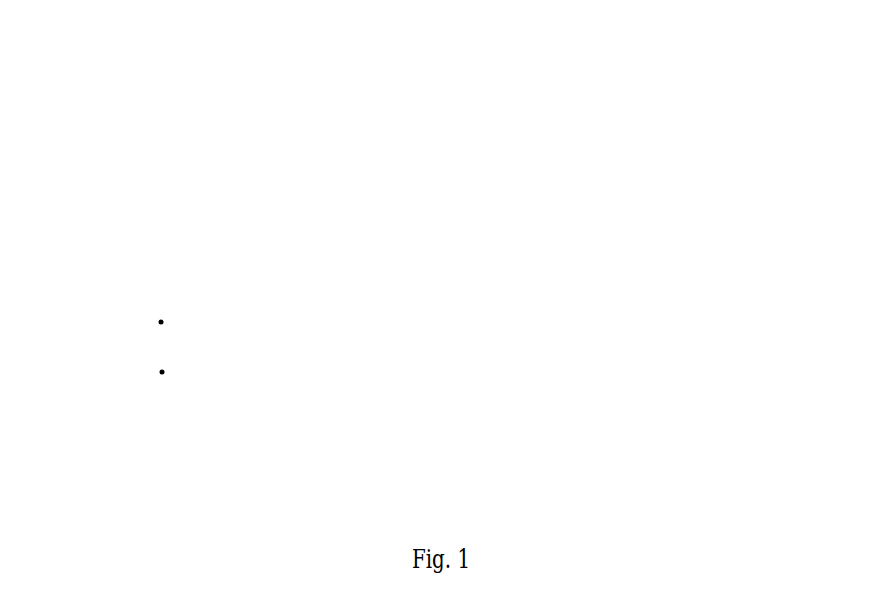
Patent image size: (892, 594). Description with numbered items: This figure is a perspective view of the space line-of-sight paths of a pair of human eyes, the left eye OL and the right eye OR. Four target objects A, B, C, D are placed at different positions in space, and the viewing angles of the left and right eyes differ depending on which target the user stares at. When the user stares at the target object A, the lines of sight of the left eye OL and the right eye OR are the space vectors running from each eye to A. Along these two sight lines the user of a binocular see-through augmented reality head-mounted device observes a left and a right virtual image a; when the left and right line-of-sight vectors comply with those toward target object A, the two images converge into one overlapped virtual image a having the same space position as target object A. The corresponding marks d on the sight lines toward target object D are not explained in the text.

The left eye OL is at (117, 311).
The right eye OR is at (117, 371).
The target object A is at (502, 145).
The target object B is at (752, 227).
The target object C is at (656, 341).
The target object D is at (658, 511).
The virtual image a is at (336, 235).
The sight lines to point D d is at (371, 411).